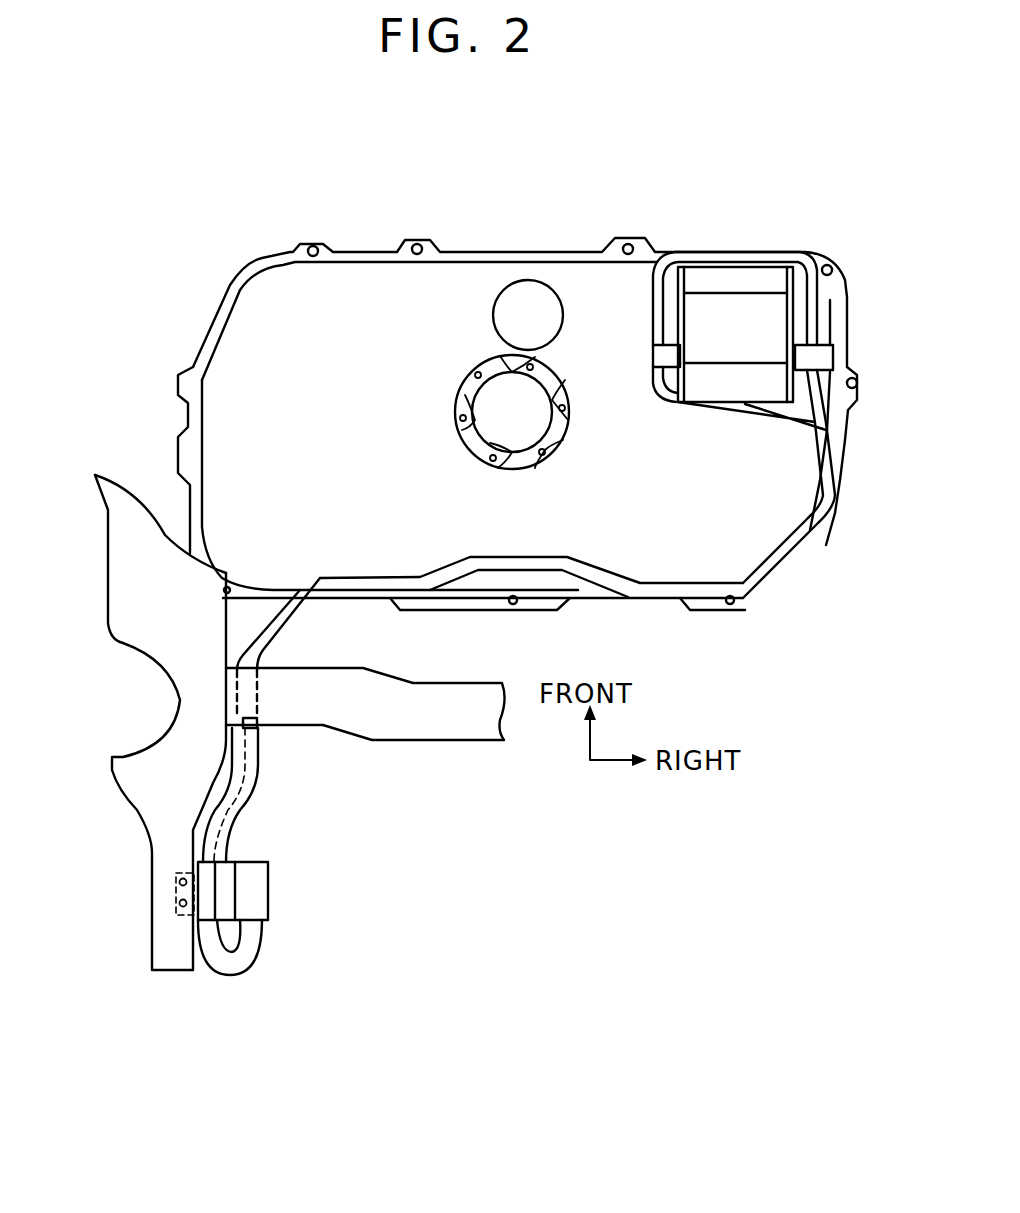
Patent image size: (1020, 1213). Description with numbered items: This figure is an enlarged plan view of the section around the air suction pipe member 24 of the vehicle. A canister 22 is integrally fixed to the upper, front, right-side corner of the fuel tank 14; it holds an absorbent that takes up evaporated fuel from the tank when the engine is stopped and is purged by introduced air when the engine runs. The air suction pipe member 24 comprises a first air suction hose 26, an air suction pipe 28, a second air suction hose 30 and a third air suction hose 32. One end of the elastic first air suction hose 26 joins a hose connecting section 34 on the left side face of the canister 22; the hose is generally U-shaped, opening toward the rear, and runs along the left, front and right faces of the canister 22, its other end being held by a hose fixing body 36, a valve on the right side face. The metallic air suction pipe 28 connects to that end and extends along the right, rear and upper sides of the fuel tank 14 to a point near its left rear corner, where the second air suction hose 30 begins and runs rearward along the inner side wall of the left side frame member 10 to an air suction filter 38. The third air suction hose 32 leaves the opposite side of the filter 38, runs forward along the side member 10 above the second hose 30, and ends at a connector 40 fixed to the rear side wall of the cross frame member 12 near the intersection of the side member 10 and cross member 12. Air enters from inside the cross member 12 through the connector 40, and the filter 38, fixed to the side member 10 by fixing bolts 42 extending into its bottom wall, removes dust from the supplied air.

The side frame member 10 is at (120, 785).
The cross frame member 12 is at (433, 741).
The fuel tank 14 is at (212, 296).
The canister 22 is at (752, 300).
The air suction pipe member 24 is at (451, 439).
The first air suction hose 26 is at (738, 260).
The air suction pipe 28 is at (766, 580).
The second air suction hose 30 is at (253, 650).
The third air suction hose 32 is at (228, 966).
The hose connecting section 34 is at (660, 357).
The hose fixing body 36 is at (823, 350).
The air suction filter 38 is at (258, 892).
The connector 40 is at (243, 718).
The fixing bolt 42 is at (178, 882).